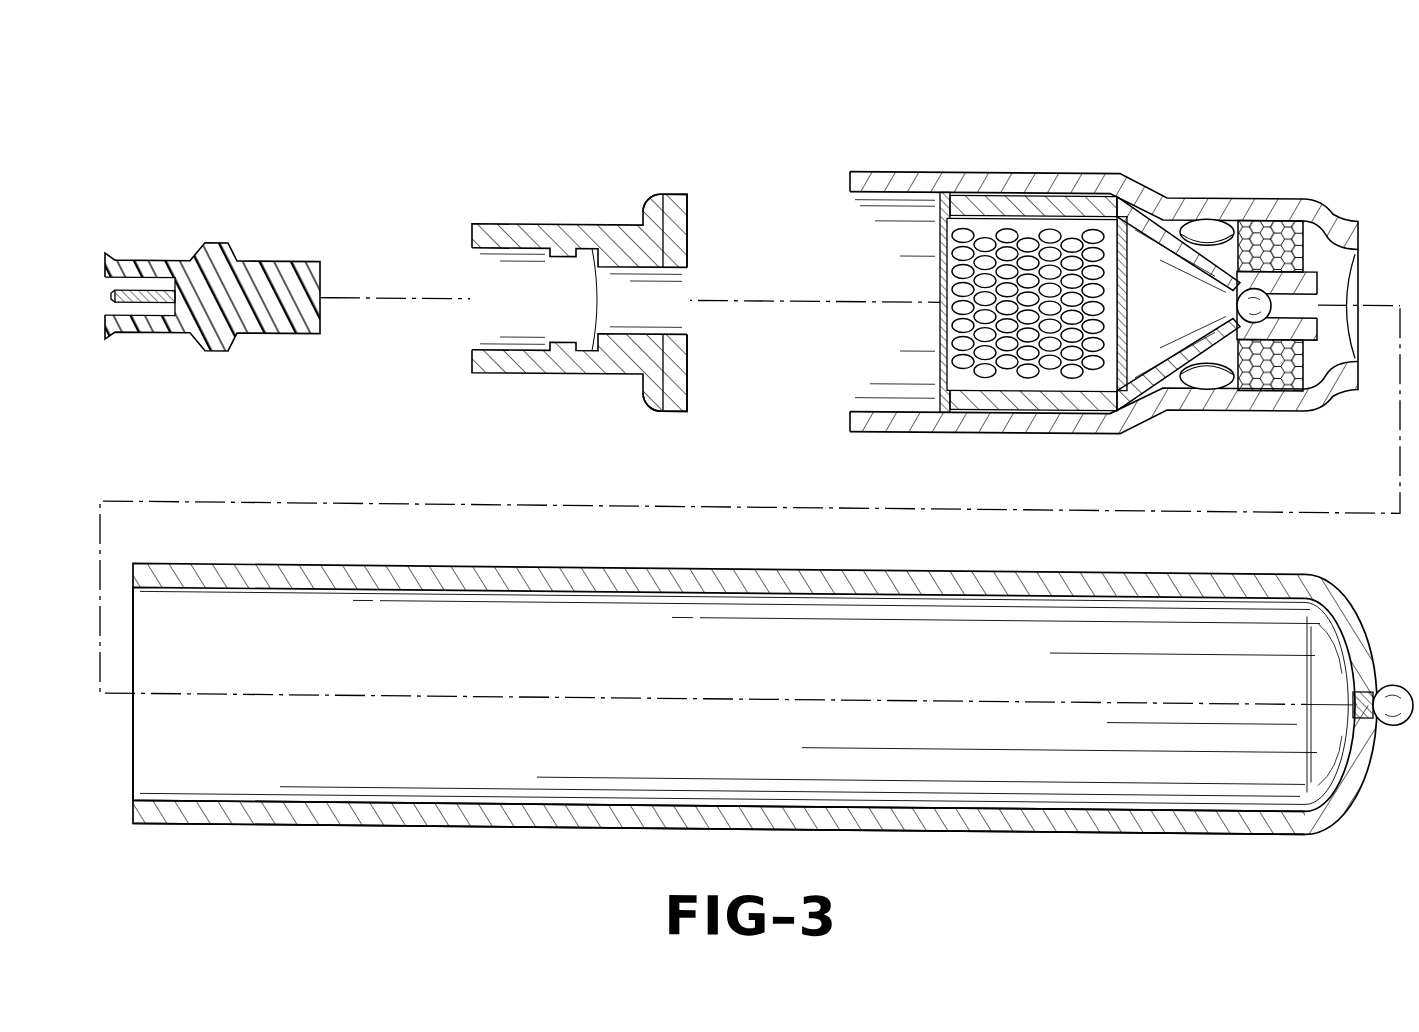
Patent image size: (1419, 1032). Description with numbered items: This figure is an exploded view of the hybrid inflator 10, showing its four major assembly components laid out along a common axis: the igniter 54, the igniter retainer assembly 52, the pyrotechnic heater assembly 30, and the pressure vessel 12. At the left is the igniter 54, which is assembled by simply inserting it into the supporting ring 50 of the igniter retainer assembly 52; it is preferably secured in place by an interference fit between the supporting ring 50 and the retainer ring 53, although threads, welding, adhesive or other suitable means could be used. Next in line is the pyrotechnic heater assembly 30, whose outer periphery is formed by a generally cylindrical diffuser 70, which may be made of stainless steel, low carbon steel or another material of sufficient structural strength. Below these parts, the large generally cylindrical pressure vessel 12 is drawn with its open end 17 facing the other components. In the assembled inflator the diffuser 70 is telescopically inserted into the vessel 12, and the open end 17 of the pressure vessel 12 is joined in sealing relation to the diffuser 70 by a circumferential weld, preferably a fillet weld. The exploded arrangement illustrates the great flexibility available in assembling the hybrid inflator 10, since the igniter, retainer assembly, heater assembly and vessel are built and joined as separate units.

The hybrid inflator 10 is at (148, 172).
The pressure vessel 12 is at (1130, 833).
The open end of the vessel 17 is at (190, 814).
The pyrotechnic heater assembly 30 is at (970, 150).
The supporting ring 50 is at (528, 362).
The igniter retainer assembly 52 is at (622, 170).
The retainer ring 53 is at (683, 357).
The igniter 54 is at (252, 258).
The diffuser 70 is at (1251, 199).